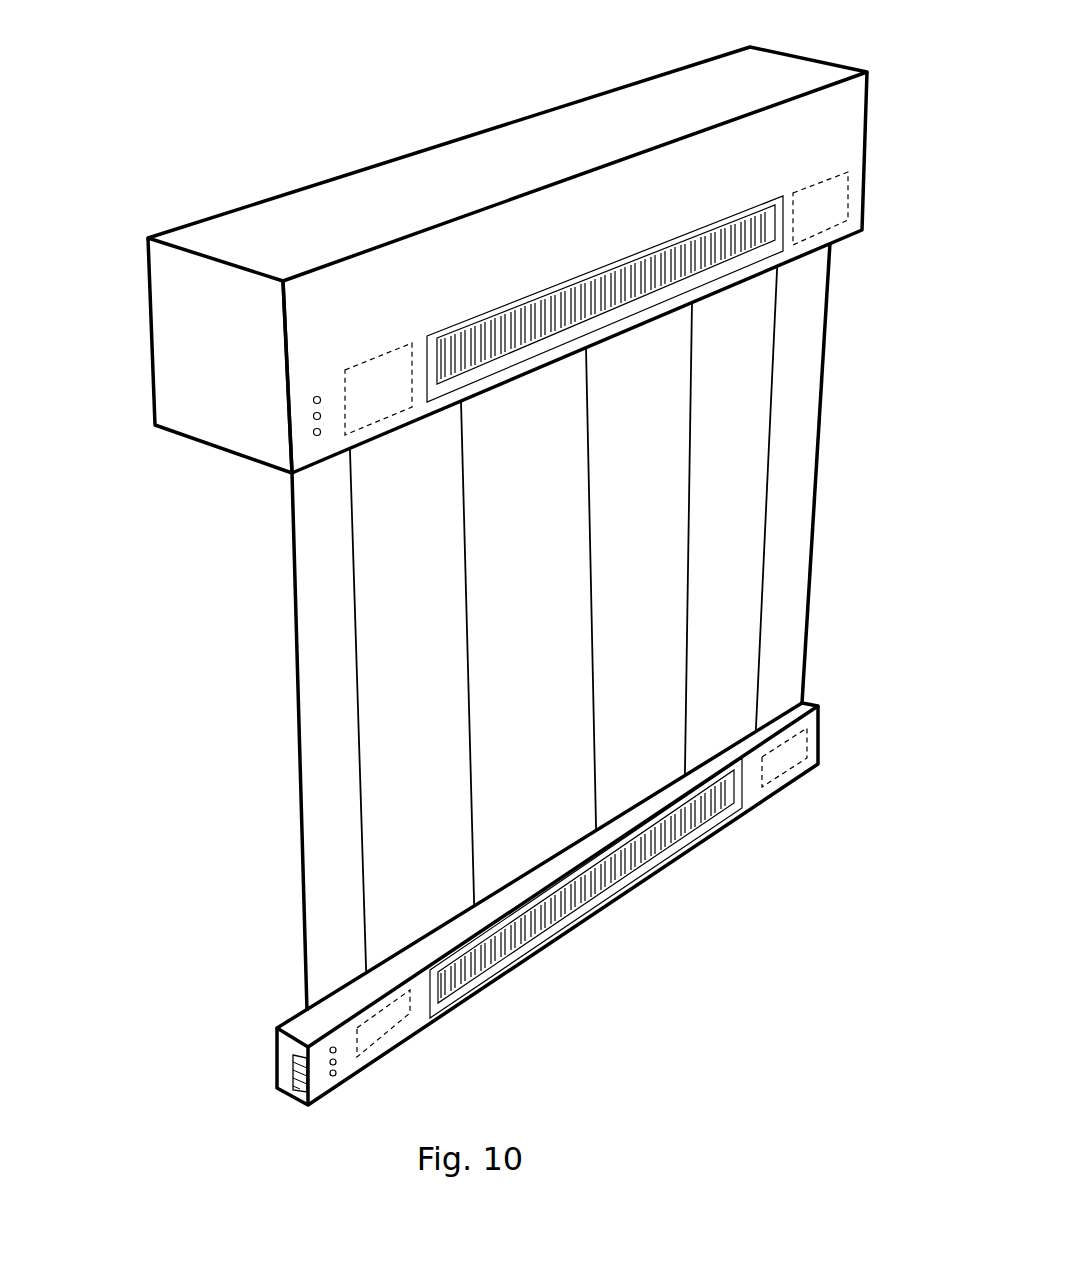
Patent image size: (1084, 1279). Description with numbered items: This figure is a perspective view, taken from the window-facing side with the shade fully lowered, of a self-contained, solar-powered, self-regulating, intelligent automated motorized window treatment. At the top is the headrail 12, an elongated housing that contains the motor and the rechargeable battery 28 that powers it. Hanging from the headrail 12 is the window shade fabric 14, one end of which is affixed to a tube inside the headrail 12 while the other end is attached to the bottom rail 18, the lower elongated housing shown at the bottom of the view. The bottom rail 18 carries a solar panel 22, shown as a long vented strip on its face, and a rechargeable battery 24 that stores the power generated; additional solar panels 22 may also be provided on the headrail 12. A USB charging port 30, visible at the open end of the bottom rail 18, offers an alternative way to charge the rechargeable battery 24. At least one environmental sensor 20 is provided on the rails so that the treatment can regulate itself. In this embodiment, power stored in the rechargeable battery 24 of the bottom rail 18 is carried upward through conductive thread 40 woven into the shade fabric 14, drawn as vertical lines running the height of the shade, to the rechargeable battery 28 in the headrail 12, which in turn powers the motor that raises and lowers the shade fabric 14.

The headrail 12 is at (157, 435).
The window shade fabric 14 is at (785, 632).
The bottom rail 18 is at (273, 1040).
The environmental sensor 20 is at (313, 432).
The solar panel 22 is at (738, 237).
The rechargeable battery 24 is at (777, 758).
The rechargeable battery 28 is at (387, 390).
The USB charging port 30 is at (297, 1082).
The conductive thread 40 is at (583, 473).